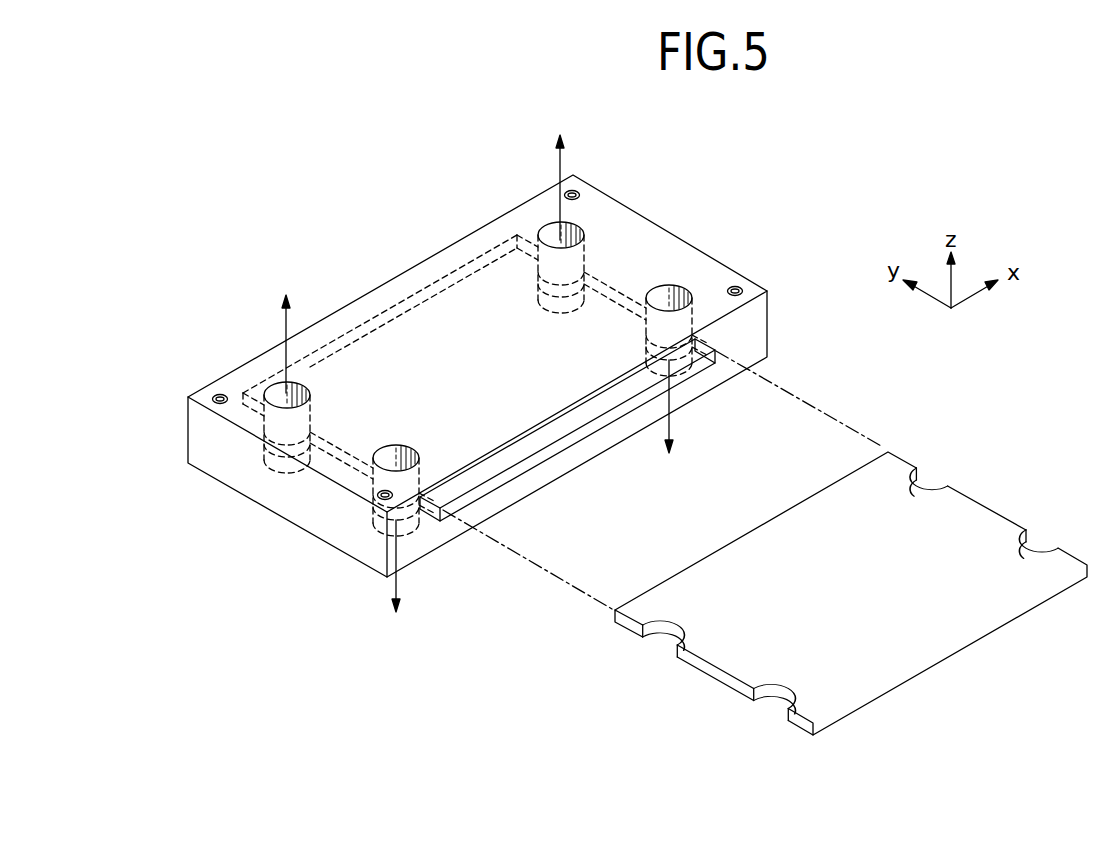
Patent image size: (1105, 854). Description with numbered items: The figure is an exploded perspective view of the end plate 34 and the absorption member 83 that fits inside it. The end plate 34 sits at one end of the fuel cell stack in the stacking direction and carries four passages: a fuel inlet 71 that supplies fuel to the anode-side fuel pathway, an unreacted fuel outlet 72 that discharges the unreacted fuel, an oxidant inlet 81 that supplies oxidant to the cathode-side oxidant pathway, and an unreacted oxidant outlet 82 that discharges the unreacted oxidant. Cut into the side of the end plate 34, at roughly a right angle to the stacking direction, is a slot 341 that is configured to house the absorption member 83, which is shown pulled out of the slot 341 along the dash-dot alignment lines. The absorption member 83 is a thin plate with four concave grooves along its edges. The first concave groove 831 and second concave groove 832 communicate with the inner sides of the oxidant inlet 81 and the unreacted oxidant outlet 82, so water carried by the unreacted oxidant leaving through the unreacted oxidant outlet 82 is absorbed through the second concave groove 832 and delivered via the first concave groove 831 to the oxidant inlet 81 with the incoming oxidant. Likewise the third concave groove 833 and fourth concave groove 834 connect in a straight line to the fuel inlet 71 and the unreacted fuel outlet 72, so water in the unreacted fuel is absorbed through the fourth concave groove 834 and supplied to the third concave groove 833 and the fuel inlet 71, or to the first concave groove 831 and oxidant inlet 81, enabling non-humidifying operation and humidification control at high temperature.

The end plate 34 is at (678, 237).
The slot 341 is at (527, 463).
The fuel inlet 71 is at (573, 227).
The unreacted fuel outlet 72 is at (377, 445).
The oxidant inlet 81 is at (277, 393).
The unreacted oxidant outlet 82 is at (672, 295).
The absorption member 83 is at (844, 608).
The first concave groove 831 is at (665, 630).
The second concave groove 832 is at (1033, 548).
The third concave groove 833 is at (925, 483).
The fourth concave groove 834 is at (775, 693).